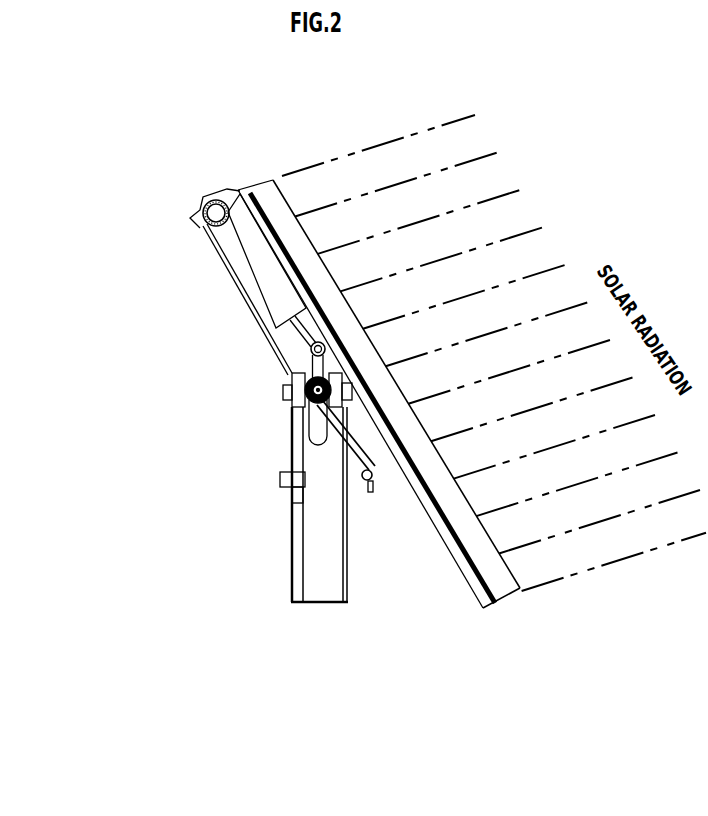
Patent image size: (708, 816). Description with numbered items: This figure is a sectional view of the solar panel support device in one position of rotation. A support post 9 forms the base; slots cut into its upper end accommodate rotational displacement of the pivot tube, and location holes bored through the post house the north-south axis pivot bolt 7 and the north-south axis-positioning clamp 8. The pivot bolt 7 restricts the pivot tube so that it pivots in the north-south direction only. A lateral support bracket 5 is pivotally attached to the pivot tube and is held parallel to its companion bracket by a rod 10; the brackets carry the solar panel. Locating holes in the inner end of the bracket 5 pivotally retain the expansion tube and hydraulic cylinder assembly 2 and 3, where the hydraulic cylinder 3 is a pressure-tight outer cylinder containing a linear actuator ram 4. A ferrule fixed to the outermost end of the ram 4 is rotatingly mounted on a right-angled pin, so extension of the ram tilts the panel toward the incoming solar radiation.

The expansion tube 2 is at (164, 222).
The hydraulic cylinder 3 is at (200, 299).
The linear actuator ram 4 is at (238, 364).
The lateral support bracket 5 is at (214, 277).
The north-south axis pivot bolt 7 is at (263, 415).
The north-south axis-positioning clamp 8 is at (249, 490).
The support post 9 is at (277, 504).
The rod 10 is at (383, 506).